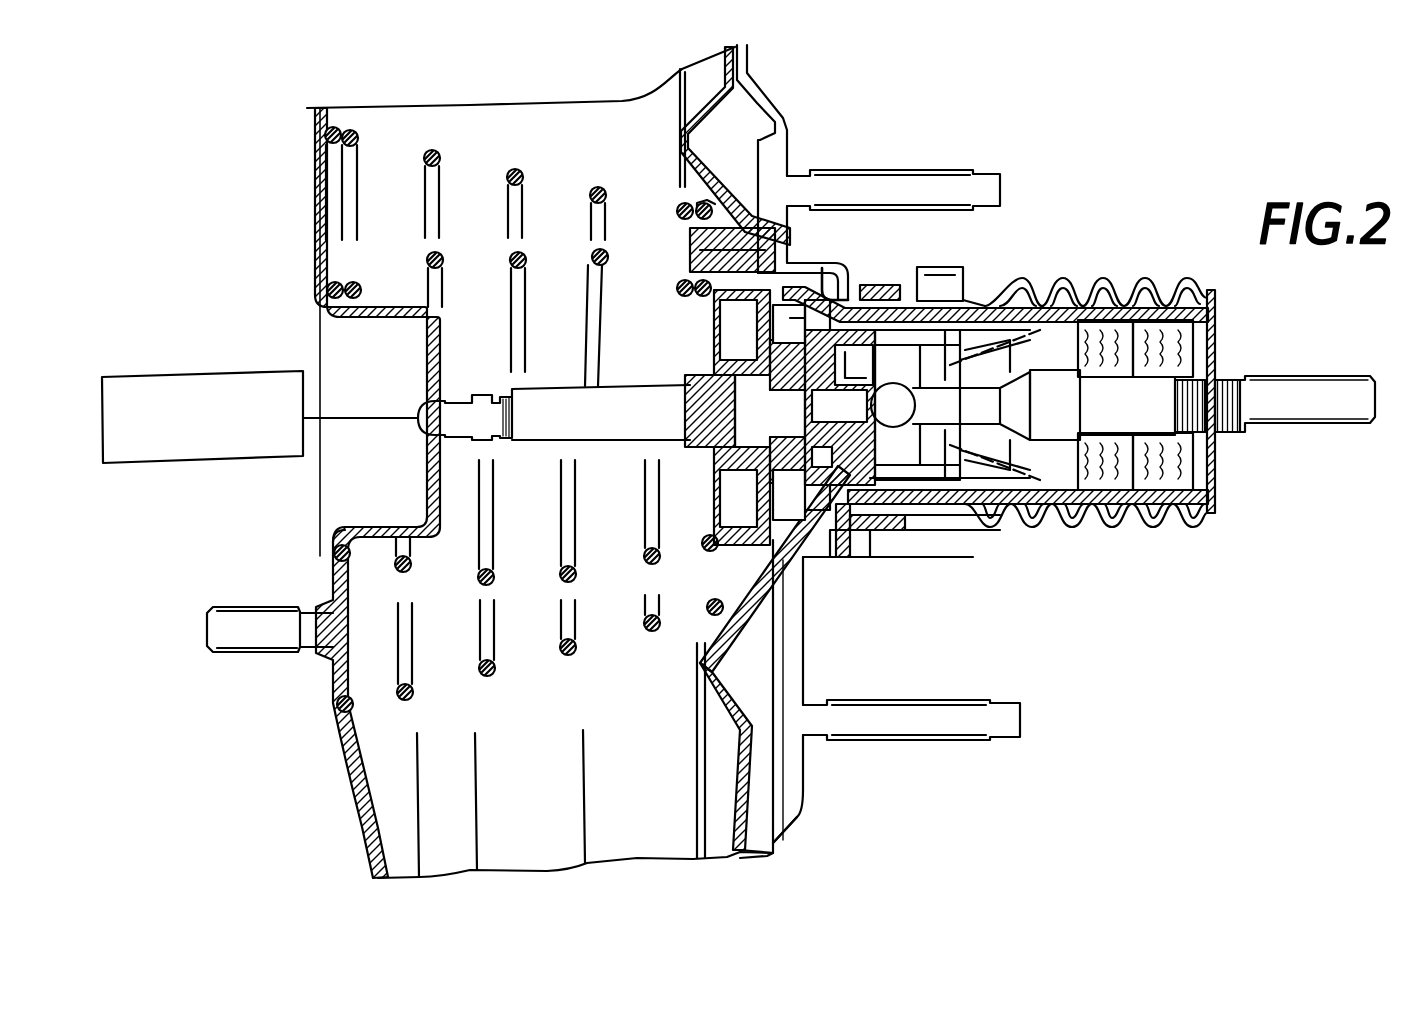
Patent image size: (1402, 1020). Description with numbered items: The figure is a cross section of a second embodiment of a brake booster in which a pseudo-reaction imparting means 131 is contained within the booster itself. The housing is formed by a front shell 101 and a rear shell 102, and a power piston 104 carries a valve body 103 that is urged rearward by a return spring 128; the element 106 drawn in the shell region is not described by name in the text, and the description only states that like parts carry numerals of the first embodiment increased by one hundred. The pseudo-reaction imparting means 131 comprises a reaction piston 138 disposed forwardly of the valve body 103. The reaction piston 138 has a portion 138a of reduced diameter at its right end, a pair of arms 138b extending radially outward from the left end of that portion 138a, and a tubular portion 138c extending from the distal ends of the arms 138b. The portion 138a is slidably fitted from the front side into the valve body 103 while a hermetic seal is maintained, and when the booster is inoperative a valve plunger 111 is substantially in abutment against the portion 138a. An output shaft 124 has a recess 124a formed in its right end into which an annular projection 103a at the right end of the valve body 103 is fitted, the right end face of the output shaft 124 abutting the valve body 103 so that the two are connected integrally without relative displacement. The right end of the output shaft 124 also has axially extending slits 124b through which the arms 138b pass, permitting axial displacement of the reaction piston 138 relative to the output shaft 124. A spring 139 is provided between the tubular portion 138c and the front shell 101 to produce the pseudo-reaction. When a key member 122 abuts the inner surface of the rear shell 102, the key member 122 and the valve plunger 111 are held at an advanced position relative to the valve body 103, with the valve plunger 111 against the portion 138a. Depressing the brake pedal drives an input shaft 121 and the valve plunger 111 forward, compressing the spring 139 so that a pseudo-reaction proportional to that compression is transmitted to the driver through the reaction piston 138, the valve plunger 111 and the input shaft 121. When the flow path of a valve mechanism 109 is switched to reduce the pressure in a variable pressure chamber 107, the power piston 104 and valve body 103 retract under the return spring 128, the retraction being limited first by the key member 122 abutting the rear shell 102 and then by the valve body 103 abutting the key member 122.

The front shell 101 is at (362, 828).
The rear shell 102 is at (810, 797).
The valve body 103 is at (693, 610).
The annular projection 103a is at (762, 482).
The power piston 104 is at (682, 158).
The rear shell 106 is at (493, 127).
The variable pressure chamber 107 is at (750, 108).
The valve mechanism 109 is at (985, 495).
The valve plunger 111 is at (826, 538).
The input shaft 121 is at (1280, 427).
The key member 122 is at (827, 543).
The output shaft 124 is at (446, 426).
The recess 124a is at (722, 380).
The slits 124b is at (740, 352).
The return spring 128 is at (490, 672).
The pseudo-reaction imparting means 131 is at (414, 263).
The reaction piston 138 is at (797, 610).
The portion of reduced diameter 138a is at (840, 297).
The arms 138b is at (795, 318).
The tubular portion 138c is at (697, 270).
The spring 139 is at (397, 558).